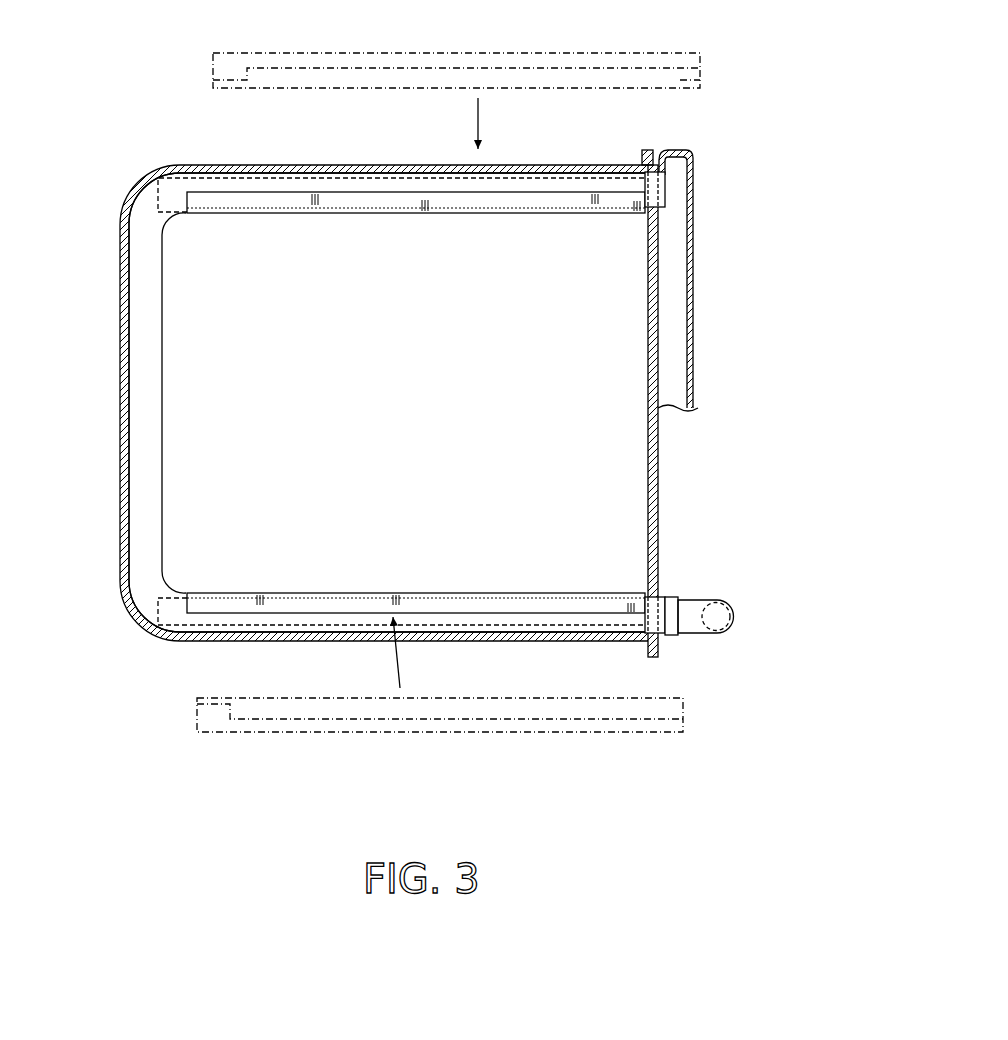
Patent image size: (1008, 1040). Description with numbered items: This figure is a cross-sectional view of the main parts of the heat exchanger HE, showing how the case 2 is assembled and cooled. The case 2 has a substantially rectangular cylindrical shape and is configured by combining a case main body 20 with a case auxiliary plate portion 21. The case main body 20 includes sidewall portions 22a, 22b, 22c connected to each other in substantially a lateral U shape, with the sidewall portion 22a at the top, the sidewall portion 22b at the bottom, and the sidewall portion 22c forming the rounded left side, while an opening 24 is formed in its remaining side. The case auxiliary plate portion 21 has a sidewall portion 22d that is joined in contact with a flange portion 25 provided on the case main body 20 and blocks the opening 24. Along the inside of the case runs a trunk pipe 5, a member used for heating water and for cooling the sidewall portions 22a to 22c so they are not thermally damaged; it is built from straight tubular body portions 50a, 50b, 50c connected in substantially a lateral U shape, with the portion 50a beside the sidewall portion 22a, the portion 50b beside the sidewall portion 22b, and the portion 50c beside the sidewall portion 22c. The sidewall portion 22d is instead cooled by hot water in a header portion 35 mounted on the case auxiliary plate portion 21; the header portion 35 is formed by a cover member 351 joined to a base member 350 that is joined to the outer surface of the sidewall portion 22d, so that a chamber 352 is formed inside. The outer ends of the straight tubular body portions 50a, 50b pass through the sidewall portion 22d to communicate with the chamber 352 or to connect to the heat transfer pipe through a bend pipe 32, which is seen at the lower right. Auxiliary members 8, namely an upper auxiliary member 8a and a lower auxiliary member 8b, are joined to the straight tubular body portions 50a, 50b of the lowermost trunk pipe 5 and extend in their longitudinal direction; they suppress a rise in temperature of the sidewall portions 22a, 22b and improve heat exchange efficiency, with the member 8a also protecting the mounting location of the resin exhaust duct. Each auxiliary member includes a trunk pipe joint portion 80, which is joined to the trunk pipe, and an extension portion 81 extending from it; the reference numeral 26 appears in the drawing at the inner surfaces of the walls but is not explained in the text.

The heat exchanger HE is at (130, 106).
The case 2 is at (491, 164).
The case main body 20 is at (548, 165).
The case auxiliary plate portion 21 is at (656, 500).
The sidewall portion 22a is at (408, 166).
The sidewall portion 22b is at (545, 641).
The sidewall portion 22c is at (122, 425).
The sidewall portion 22d is at (660, 533).
The opening 24 is at (650, 450).
The flange portion 25 is at (644, 153).
The inner wall surface 26 is at (302, 178).
The bend pipe 32 is at (697, 606).
The header portion 35 is at (694, 283).
The base member 350 is at (658, 378).
The cover member 351 is at (692, 347).
The chamber 352 is at (672, 313).
The trunk pipe 5 is at (162, 362).
The straight tubular body portion 50a is at (362, 185).
The straight tubular body portion 50b is at (460, 616).
The straight tubular body portion 50c is at (155, 426).
The auxiliary member 8 is at (426, 396).
The auxiliary member 8a is at (437, 63).
The auxiliary member 8b is at (405, 600).
The trunk pipe joint portion 80 is at (690, 82).
The extension portion 81 is at (625, 62).